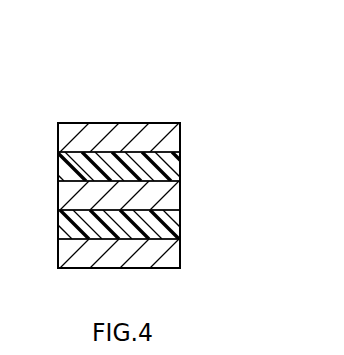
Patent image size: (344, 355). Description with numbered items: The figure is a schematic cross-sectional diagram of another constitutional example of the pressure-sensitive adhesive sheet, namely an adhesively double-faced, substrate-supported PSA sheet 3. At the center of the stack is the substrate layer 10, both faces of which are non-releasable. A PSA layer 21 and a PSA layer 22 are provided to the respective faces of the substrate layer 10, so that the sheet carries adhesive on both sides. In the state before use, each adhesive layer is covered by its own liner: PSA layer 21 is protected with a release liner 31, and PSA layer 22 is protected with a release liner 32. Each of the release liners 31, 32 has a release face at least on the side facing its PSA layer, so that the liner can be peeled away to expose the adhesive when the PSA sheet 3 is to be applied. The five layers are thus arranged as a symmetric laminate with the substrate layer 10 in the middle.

The PSA sheet 3 is at (143, 147).
The release liner 32 is at (180, 139).
The PSA layer 22 is at (180, 169).
The substrate layer 10 is at (180, 199).
The PSA layer 21 is at (180, 228).
The release liner 31 is at (180, 258).